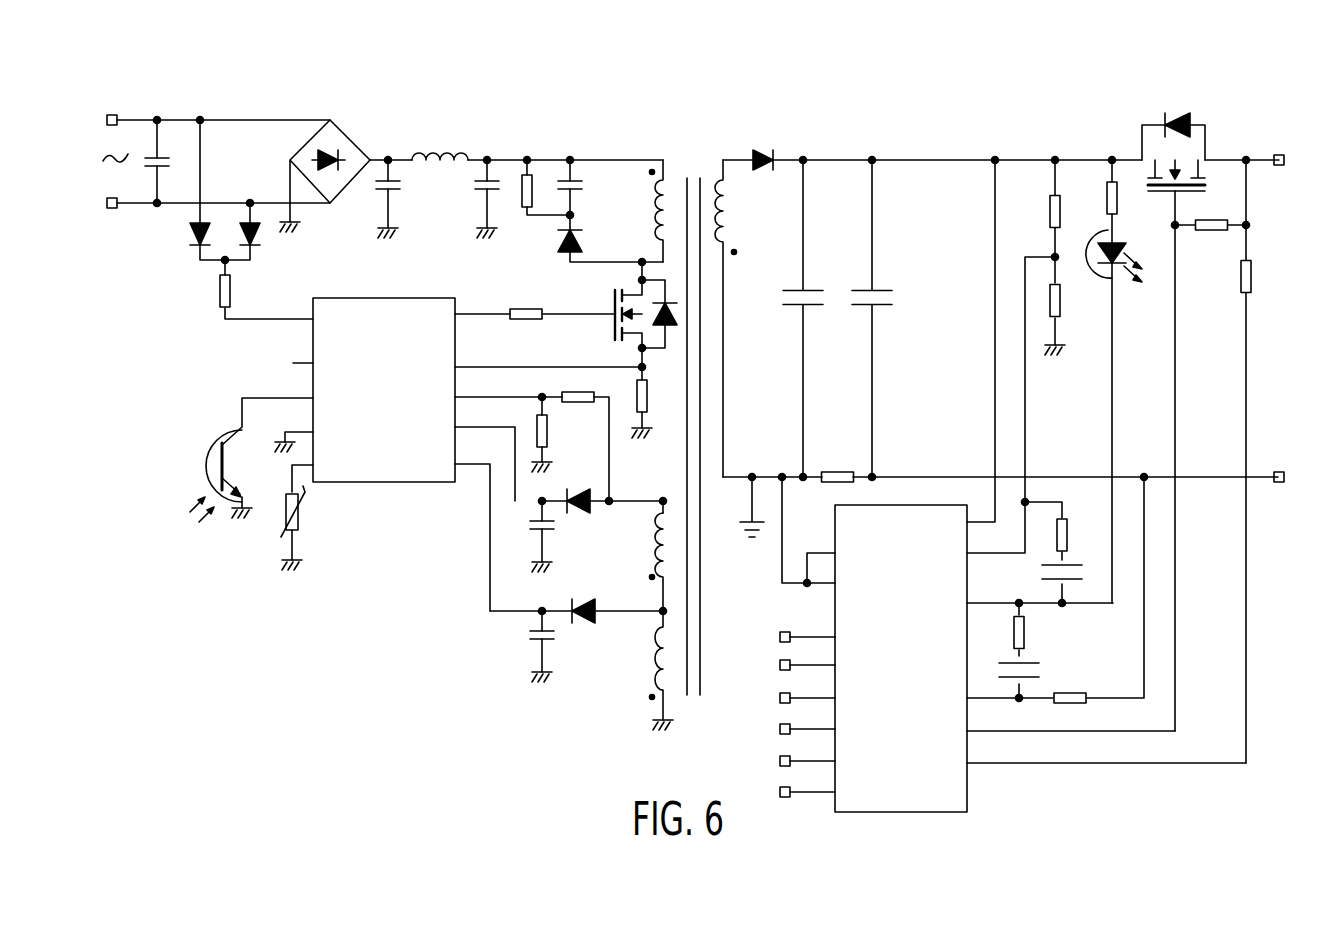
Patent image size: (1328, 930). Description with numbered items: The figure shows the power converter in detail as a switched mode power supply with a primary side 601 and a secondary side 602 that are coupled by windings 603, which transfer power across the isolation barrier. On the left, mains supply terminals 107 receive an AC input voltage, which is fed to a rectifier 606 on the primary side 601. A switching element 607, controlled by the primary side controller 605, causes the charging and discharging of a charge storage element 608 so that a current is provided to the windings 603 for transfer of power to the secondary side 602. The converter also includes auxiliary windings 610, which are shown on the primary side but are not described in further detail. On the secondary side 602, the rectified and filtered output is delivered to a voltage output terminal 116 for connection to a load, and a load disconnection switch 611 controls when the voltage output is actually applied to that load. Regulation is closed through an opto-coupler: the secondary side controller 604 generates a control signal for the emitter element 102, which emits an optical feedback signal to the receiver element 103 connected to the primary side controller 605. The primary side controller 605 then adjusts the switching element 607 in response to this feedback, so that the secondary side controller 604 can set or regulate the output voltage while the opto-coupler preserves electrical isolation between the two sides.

The mains supply terminals 107 is at (111, 104).
The rectifier 606 is at (309, 105).
The primary side 601 is at (437, 120).
The charge storage element 608 is at (572, 184).
The windings 603 is at (698, 157).
The switching element 607 is at (612, 327).
The primary side controller 605 is at (390, 487).
The receiver element 103 is at (205, 455).
The auxiliary windings 610 is at (656, 646).
The secondary side 602 is at (972, 118).
The load disconnection switch 611 is at (1180, 113).
The voltage output terminal 116 is at (1280, 153).
The emitter element 102 is at (1109, 272).
The secondary side controller 604 is at (967, 785).